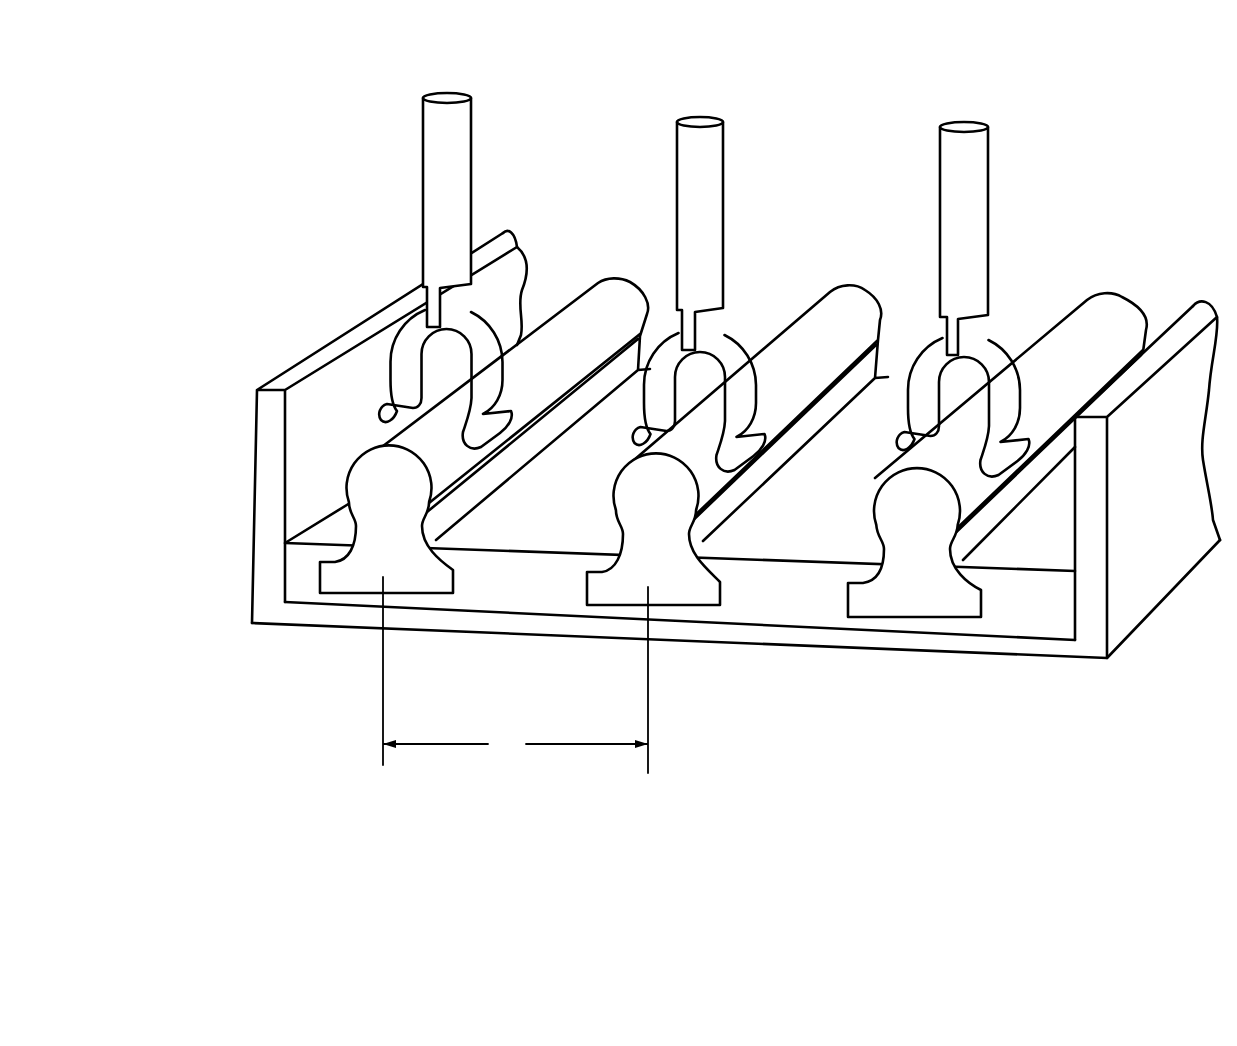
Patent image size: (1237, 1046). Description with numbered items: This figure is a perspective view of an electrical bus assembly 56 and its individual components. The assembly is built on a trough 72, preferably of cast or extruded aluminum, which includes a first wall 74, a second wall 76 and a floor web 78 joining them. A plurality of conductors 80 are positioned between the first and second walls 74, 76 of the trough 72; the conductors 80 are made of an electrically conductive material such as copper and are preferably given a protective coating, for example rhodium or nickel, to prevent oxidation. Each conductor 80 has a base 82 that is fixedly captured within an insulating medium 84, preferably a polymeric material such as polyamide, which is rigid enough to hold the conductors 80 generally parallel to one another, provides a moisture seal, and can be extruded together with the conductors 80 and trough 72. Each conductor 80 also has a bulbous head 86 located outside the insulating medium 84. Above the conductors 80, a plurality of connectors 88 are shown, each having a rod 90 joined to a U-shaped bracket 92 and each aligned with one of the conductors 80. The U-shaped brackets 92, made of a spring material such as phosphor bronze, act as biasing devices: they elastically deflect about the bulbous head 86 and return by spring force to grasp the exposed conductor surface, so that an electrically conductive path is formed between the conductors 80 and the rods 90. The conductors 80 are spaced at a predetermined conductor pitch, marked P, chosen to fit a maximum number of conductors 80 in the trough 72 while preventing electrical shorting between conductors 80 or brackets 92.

The bus assembly 56 is at (310, 294).
The trough 72 is at (245, 423).
The first wall 74 is at (268, 498).
The second wall 76 is at (1090, 570).
The floor web 78 is at (897, 642).
The conductors 80 is at (372, 545).
The base 82 is at (605, 583).
The insulating medium 84 is at (498, 580).
The bulbous head 86 is at (918, 480).
The connectors 88 is at (996, 103).
The rod 90 is at (982, 233).
The U-shaped bracket 92 is at (995, 358).